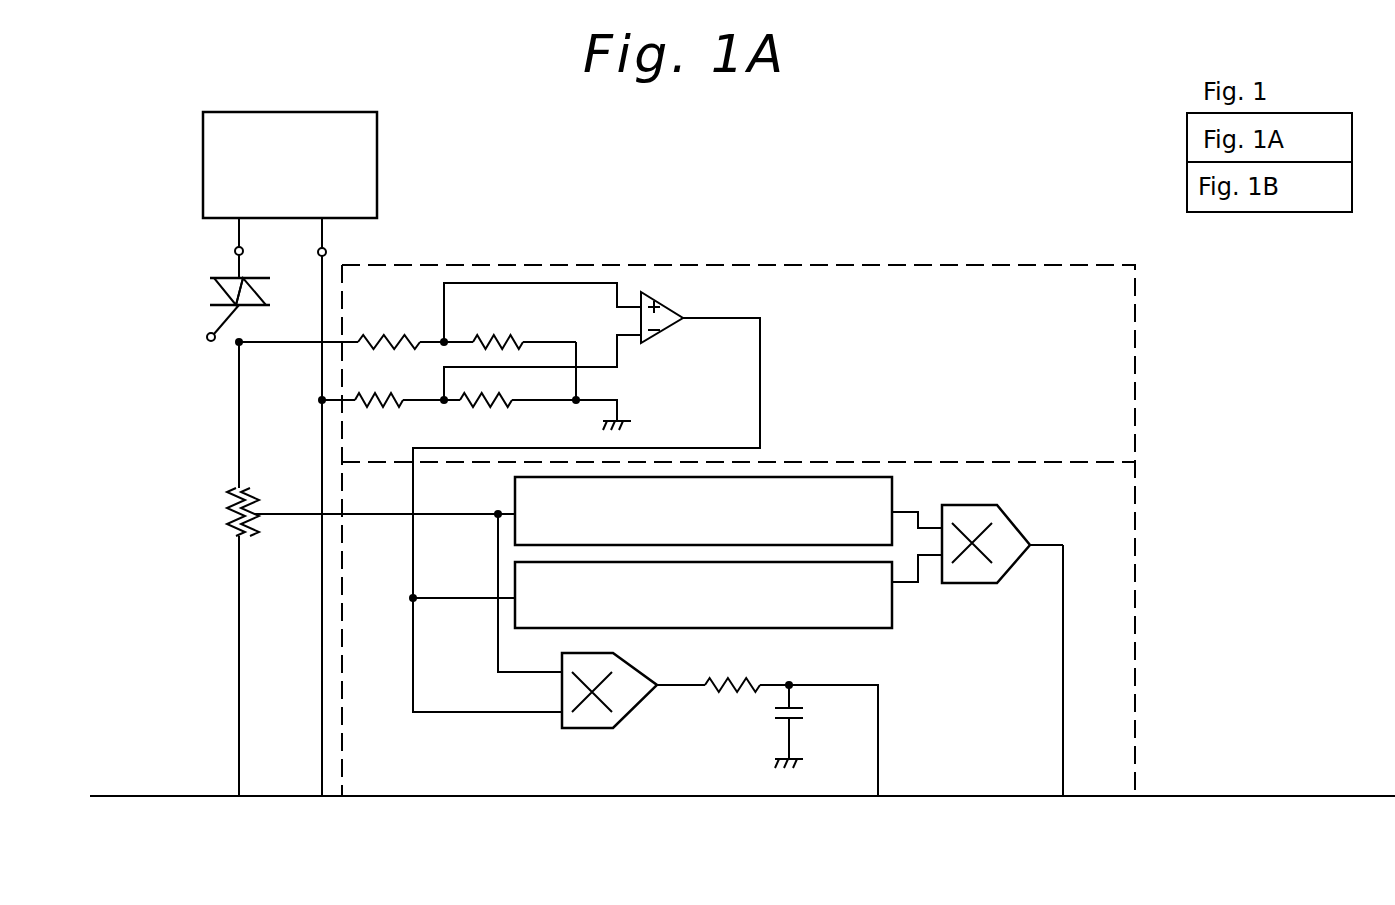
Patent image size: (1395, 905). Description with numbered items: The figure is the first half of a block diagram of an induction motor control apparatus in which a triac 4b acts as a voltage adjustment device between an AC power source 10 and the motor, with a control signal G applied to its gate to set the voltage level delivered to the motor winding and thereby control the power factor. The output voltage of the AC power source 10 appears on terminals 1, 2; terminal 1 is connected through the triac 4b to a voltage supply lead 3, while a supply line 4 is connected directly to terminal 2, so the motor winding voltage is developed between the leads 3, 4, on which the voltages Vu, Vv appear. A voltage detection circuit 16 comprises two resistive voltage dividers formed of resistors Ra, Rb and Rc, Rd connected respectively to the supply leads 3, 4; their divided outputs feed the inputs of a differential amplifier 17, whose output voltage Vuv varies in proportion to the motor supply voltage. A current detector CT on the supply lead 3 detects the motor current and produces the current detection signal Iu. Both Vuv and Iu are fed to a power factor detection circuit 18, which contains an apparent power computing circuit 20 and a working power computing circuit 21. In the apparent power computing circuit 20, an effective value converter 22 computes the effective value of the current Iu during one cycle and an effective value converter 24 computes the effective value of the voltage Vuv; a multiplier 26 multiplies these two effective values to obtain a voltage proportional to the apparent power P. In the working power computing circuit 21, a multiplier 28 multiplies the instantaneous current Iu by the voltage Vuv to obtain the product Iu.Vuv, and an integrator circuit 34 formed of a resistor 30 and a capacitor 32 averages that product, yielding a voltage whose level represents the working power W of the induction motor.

The AC power source 10 is at (377, 172).
The terminal 1 is at (243, 251).
The terminal 2 is at (326, 252).
The voltage supply lead 3 is at (236, 430).
The supply line 4 is at (324, 447).
The triac (switching element) 4b is at (209, 304).
The control signal G is at (212, 354).
The voltage Vu is at (246, 340).
The voltage Vv is at (317, 402).
The voltage detection circuit 16 is at (1137, 305).
The differential amplifier 17 is at (668, 336).
The power factor detection circuit 18 is at (1135, 660).
The resistor Ra is at (362, 338).
The resistor Rb is at (478, 338).
The resistor Rc is at (393, 405).
The resistor Rd is at (498, 405).
The detection output signal Vuv is at (760, 365).
The current detector CT is at (228, 514).
The current detection signal Iu is at (445, 512).
The effective value converter 22 is at (892, 488).
The effective value converter 24 is at (892, 610).
The apparent power computing circuit 20 is at (996, 500).
The multiplier 26 is at (1018, 533).
The apparent power P is at (1063, 565).
The working power computing circuit 21 is at (950, 635).
The multiplier 28 is at (632, 665).
The output value Iu·Vuv Iu.Vuv is at (660, 690).
The resistor 30 is at (732, 692).
The capacitor 32 is at (803, 712).
The integrator circuit 34 is at (762, 712).
The working power W is at (878, 708).